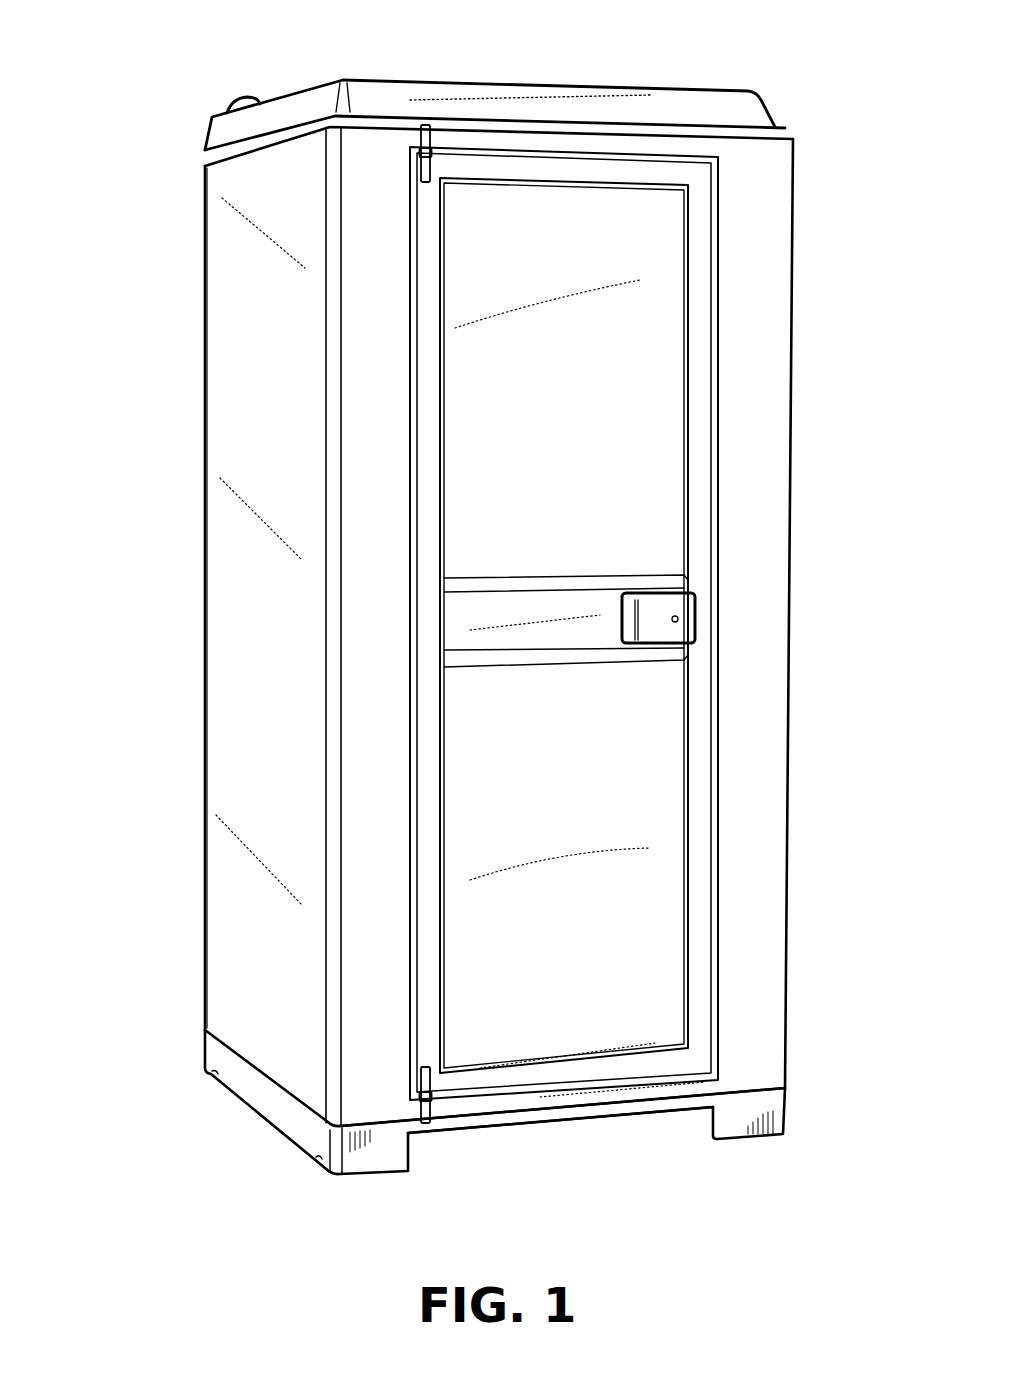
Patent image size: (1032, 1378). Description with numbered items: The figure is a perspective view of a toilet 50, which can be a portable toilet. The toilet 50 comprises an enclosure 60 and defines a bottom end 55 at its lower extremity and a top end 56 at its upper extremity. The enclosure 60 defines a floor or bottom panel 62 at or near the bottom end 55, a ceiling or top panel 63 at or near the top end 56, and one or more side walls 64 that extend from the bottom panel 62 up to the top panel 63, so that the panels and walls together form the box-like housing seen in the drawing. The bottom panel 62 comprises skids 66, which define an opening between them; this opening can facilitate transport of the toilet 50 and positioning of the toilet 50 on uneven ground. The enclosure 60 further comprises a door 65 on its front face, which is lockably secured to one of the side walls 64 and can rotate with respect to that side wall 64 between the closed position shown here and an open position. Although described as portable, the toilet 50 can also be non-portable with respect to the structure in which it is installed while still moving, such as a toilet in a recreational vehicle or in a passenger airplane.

The toilet 50 is at (116, 99).
The bottom end 55 is at (537, 1136).
The top end 56 is at (495, 75).
The enclosure 60 is at (134, 598).
The bottom panel 62 is at (588, 1113).
The top panel 63 is at (695, 100).
The side wall 64 is at (220, 657).
The door 65 is at (657, 713).
The skids 66 is at (377, 1162).